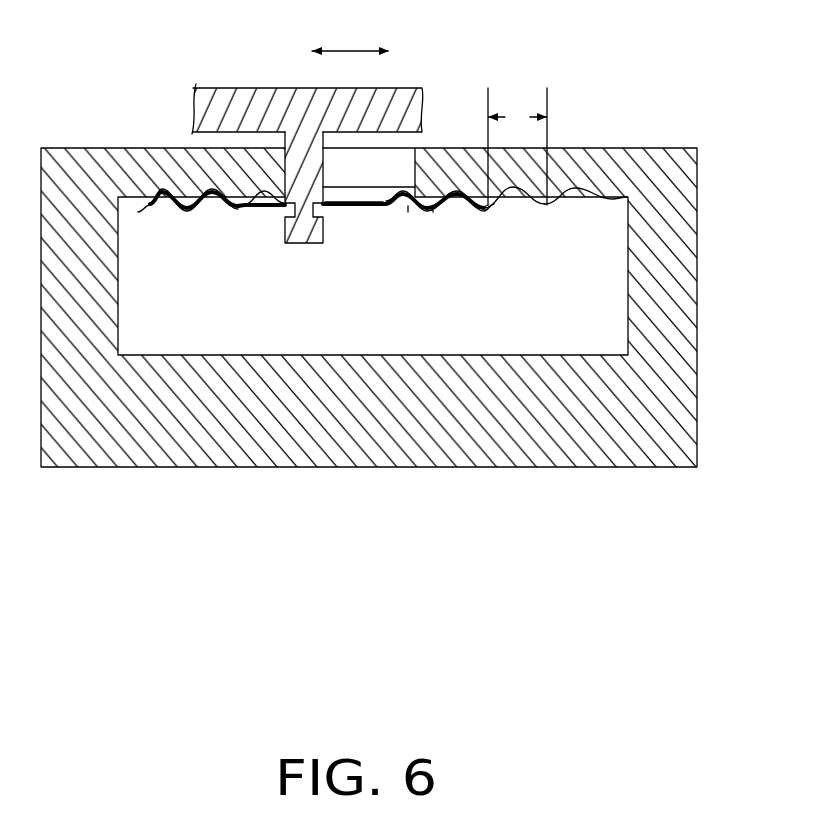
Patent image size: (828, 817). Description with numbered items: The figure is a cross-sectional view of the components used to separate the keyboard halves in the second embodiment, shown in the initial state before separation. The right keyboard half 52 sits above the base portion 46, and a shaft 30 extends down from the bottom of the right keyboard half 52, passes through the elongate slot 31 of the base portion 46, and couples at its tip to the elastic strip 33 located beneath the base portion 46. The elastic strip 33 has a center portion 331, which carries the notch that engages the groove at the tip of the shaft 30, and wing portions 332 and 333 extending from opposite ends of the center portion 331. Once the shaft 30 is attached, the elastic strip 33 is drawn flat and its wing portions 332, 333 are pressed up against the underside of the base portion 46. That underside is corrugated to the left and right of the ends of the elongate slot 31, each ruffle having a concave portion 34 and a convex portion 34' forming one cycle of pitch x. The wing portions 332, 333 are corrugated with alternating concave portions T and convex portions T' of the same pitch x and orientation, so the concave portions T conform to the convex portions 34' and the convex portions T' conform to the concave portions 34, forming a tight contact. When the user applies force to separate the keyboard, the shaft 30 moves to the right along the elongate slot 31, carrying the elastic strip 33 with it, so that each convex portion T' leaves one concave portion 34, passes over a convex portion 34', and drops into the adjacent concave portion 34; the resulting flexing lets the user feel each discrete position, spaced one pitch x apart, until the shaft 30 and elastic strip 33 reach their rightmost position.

The base portion 46 is at (600, 146).
The right keyboard half 52 is at (374, 86).
The shaft 30 is at (270, 206).
The elongate slot 31 is at (358, 177).
The elastic strip 33 is at (487, 217).
The center portion 331 is at (255, 213).
The wing portion 332 is at (185, 213).
The wing portion 333 is at (477, 213).
The concave portion 34 is at (586, 234).
The convex portion 34' is at (518, 234).
The concave portion T is at (439, 253).
The convex portion T' is at (400, 247).
The pitch x is at (517, 146).